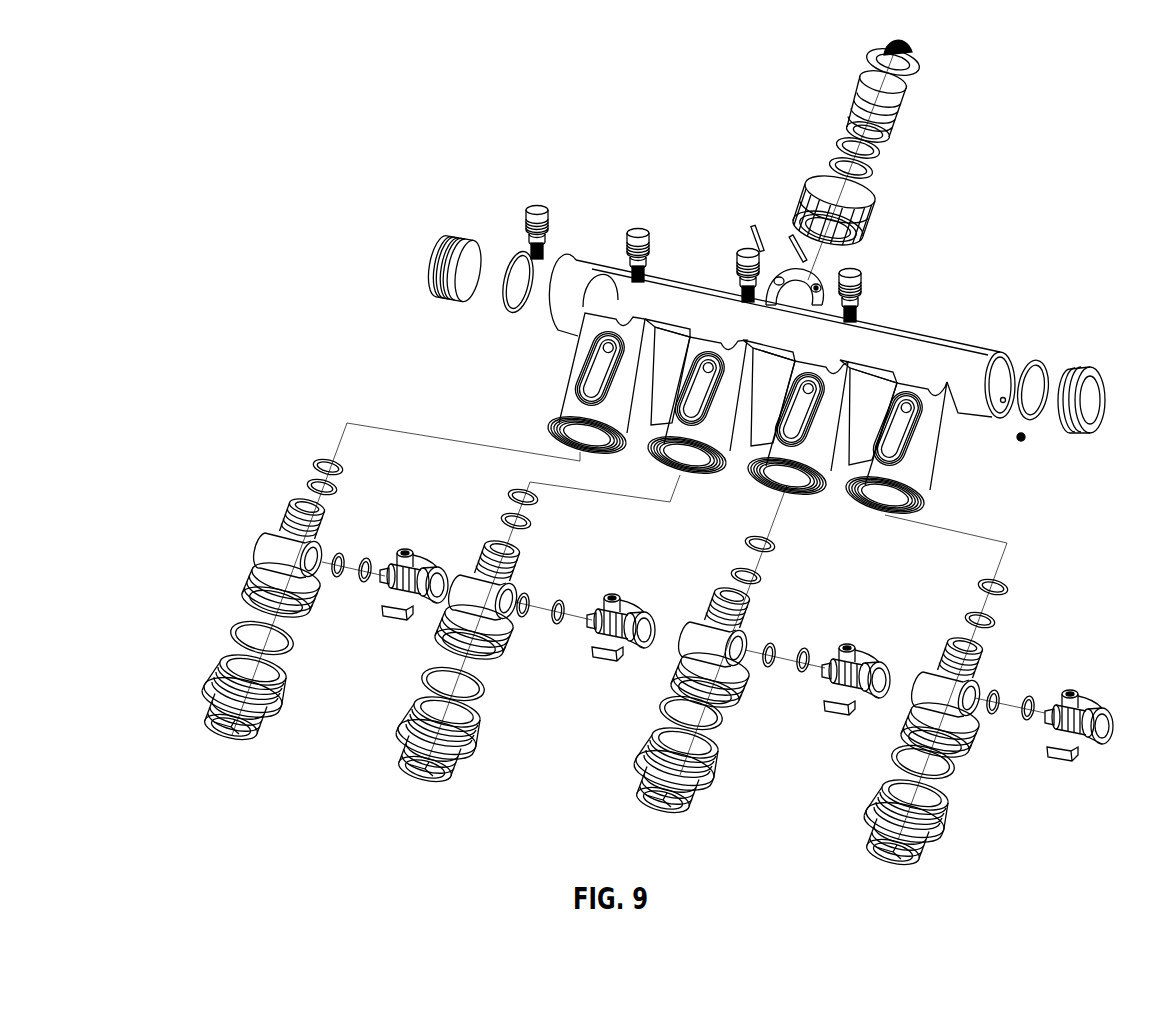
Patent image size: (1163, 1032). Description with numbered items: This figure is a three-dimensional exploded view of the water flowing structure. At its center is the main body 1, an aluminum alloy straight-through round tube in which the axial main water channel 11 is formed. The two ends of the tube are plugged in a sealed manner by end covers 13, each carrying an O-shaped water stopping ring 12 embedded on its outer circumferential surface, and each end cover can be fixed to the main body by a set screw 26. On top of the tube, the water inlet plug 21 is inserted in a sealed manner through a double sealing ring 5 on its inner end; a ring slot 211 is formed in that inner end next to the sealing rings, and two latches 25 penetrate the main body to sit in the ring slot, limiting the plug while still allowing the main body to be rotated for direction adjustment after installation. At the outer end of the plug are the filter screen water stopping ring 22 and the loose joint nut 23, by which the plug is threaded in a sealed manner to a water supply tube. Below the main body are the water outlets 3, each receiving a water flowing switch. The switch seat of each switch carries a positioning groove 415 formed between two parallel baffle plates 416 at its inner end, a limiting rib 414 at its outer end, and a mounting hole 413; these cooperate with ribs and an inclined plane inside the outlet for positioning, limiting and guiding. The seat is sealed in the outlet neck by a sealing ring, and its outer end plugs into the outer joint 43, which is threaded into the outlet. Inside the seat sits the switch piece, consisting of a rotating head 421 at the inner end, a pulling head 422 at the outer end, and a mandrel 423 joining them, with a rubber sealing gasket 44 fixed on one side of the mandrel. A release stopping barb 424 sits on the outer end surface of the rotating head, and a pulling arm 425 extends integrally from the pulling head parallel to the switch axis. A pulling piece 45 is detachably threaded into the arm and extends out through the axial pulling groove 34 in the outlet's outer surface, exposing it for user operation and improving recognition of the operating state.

The main body 1 is at (582, 267).
The water outlet 3 is at (565, 393).
The double sealing ring 5 is at (840, 157).
The main water channel 11 is at (997, 377).
The water stopping ring 12 is at (513, 253).
The end cover 13 is at (460, 237).
The water inlet plug 21 is at (863, 88).
The ring slot 211 is at (897, 113).
The filter screen water stopping ring 22 is at (920, 70).
The loose joint nut 23 is at (873, 217).
The latch 25 is at (741, 222).
The set screw 26 is at (1023, 440).
The pulling groove 34 is at (912, 440).
The outer joint 43 is at (220, 673).
The sealing gasket 44 is at (387, 617).
The pulling piece 45 is at (828, 290).
The mounting hole 413 is at (977, 690).
The limiting rib 414 is at (923, 713).
The positioning groove 415 is at (290, 520).
The baffle plate 416 is at (297, 520).
The rotating head 421 is at (837, 657).
The pulling head 422 is at (890, 667).
The mandrel 423 is at (607, 627).
The release stopping barb 424 is at (1043, 723).
The pulling arm 425 is at (417, 553).